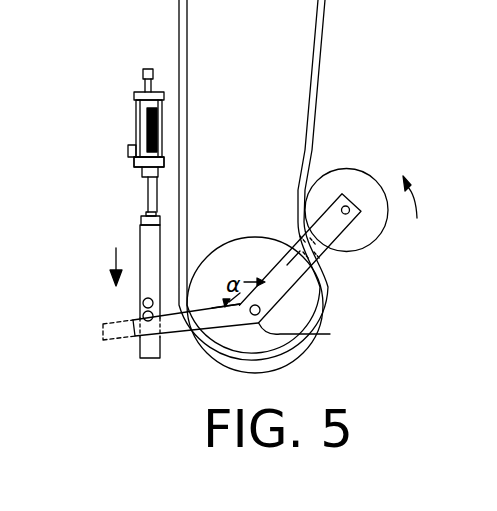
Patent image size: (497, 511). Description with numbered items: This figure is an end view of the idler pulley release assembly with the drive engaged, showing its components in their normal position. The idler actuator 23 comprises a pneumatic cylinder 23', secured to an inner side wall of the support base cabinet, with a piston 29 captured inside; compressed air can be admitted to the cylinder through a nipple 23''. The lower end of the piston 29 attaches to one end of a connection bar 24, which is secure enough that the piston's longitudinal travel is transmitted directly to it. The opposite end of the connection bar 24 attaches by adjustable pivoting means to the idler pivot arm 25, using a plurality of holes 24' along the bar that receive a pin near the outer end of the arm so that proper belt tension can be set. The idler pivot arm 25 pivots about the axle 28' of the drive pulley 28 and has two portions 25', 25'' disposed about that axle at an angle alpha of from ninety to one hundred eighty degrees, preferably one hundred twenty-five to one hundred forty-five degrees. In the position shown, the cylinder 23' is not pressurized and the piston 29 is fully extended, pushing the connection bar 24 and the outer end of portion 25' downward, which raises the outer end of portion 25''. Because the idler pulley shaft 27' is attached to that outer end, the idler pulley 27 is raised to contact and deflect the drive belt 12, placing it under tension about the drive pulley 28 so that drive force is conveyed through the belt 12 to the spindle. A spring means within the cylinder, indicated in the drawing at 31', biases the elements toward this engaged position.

The drive belt 12 is at (318, 107).
The idler actuator 23 is at (121, 123).
The pneumatic cylinder 23' is at (104, 148).
The nipple 23'' is at (112, 173).
The connection bar 24 is at (112, 285).
The holes 24' is at (162, 322).
The idler pivot arm 25 is at (304, 258).
The first portion of idler pivot arm 25' is at (219, 254).
The second portion of idler pivot arm 25'' is at (271, 232).
The idler pulley 27 is at (368, 216).
The idler pulley shaft 27' is at (368, 174).
The drive pulley 28 is at (268, 314).
The drive pulley axle 28' is at (311, 329).
The piston 29 is at (148, 200).
The slot 31' is at (190, 128).